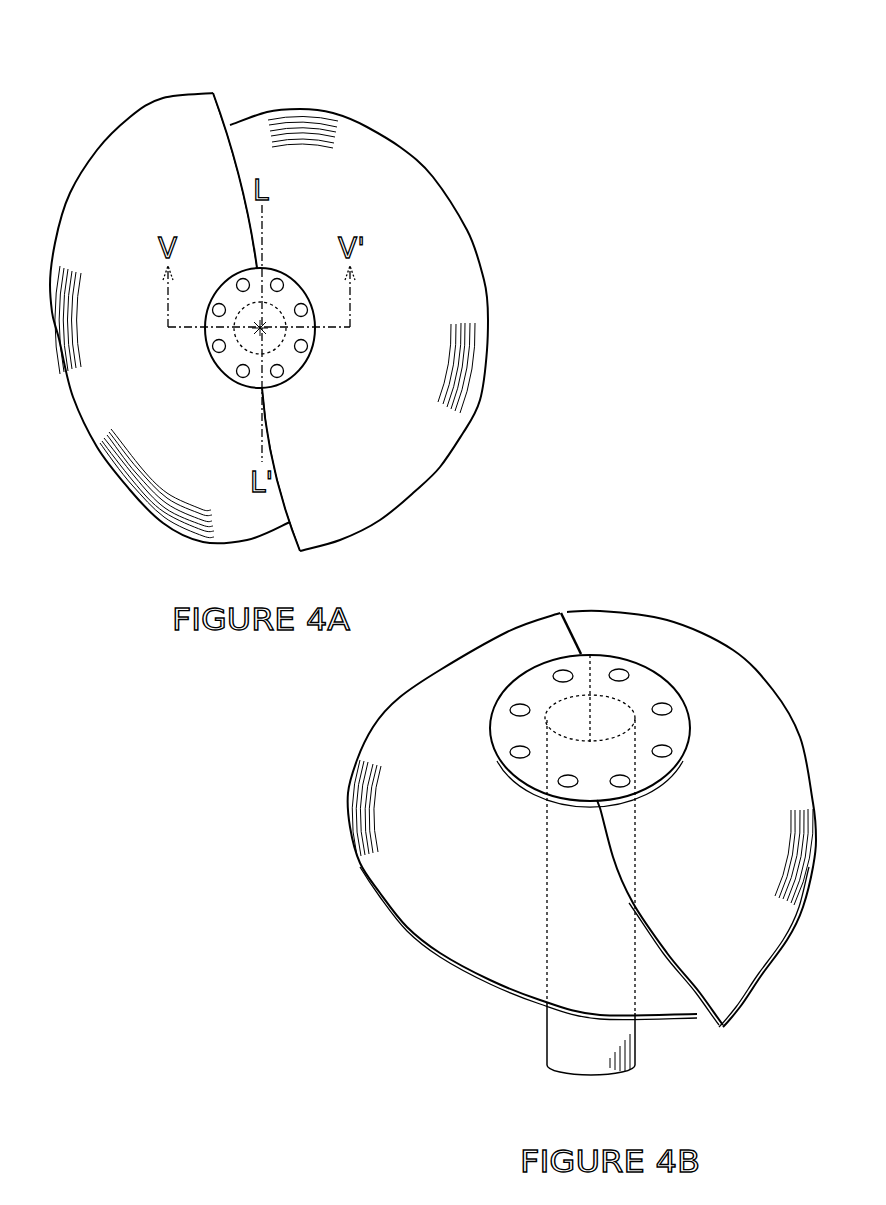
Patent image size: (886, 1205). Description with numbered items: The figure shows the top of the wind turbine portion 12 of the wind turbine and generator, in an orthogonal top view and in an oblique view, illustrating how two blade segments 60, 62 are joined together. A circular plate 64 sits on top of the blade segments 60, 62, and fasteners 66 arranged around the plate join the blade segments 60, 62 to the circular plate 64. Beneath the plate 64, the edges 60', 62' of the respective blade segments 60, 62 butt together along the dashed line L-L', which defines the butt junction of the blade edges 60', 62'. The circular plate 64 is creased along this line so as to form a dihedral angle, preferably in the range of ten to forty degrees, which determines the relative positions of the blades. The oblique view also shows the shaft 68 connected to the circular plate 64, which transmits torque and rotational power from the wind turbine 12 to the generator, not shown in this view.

In FIG. 4A, the wind turbine portion 12 is at (149, 74).
In FIG. 4B, the wind turbine portion 12 is at (665, 550).
In FIG. 4A, the blade segment 60 is at (166, 318).
In FIG. 4B, the blade segment 60 is at (484, 816).
In FIG. 4A, the blade edge 60' is at (267, 165).
In FIG. 4A, the blade segment 62 is at (391, 330).
In FIG. 4B, the blade segment 62 is at (691, 792).
In FIG. 4A, the blade edge 62' is at (211, 488).
In FIG. 4A, the circular plate 64 is at (290, 293).
In FIG. 4B, the circular plate 64 is at (678, 733).
In FIG. 4A, the fasteners 66 is at (281, 372).
In FIG. 4B, the fasteners 66 is at (510, 753).
In FIG. 4B, the shaft 68 is at (572, 1022).